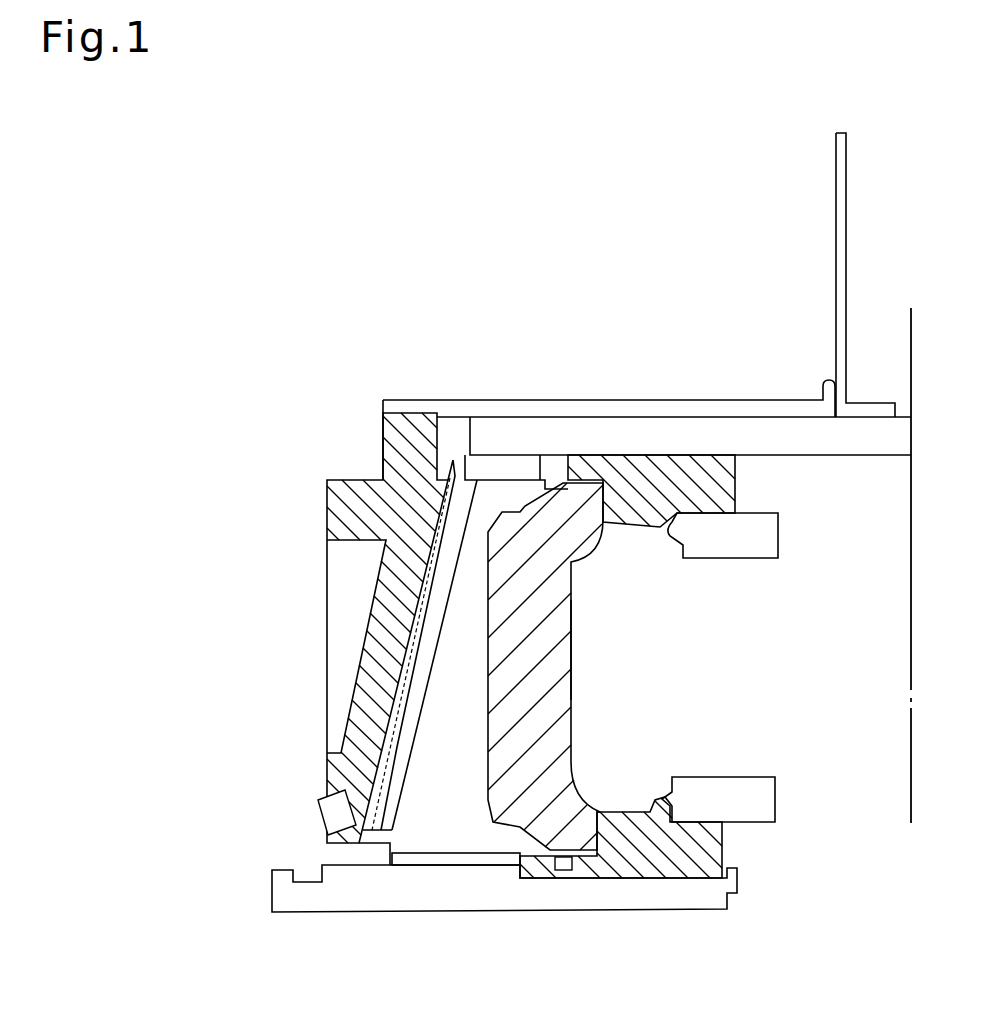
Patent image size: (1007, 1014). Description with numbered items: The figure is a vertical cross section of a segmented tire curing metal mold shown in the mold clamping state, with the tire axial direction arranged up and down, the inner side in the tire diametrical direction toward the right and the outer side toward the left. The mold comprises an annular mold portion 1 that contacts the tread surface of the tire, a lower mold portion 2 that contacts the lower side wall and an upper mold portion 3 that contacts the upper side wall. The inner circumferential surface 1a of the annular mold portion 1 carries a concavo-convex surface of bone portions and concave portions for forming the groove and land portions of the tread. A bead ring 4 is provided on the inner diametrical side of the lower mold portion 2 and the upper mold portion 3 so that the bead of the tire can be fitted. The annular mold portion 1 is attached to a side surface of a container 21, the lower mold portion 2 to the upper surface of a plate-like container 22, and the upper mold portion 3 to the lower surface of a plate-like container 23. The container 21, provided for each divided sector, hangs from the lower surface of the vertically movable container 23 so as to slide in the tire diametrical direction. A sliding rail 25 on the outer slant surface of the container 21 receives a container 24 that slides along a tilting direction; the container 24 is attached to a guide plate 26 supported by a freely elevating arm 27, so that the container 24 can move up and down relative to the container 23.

The annular mold portion 1 is at (563, 632).
The inner circumferential surface 1a is at (567, 691).
The lower mold portion 2 is at (627, 868).
The upper mold portion 3 is at (653, 467).
The bead ring 4 is at (754, 548).
The container 21 is at (447, 828).
The plate-like container 22 is at (677, 900).
The plate-like container 23 is at (760, 427).
The container 24 is at (348, 493).
The sliding rail 25 is at (393, 754).
The guide plate 26 is at (537, 406).
The arm 27 is at (847, 229).